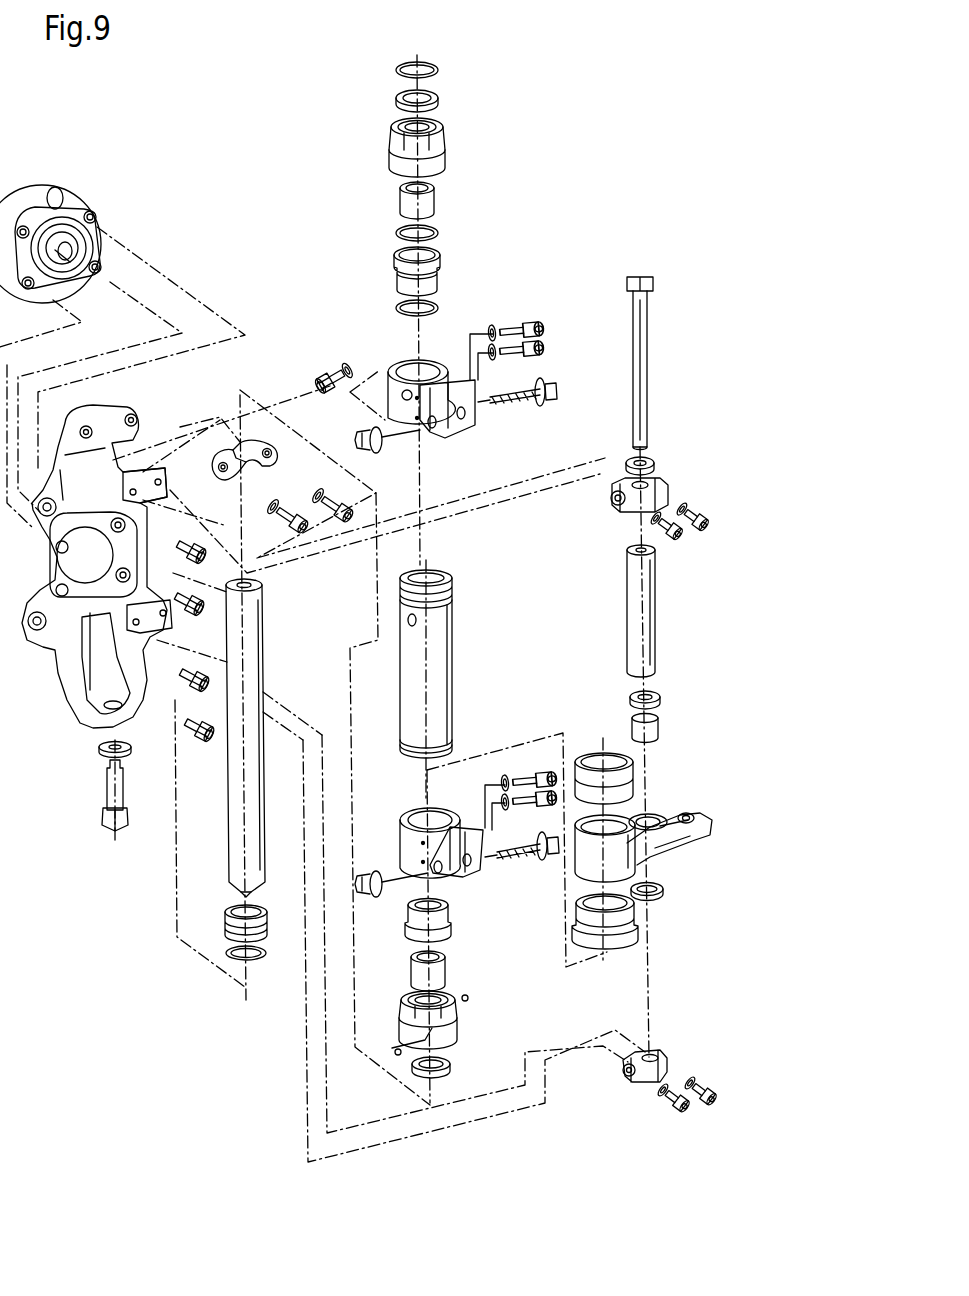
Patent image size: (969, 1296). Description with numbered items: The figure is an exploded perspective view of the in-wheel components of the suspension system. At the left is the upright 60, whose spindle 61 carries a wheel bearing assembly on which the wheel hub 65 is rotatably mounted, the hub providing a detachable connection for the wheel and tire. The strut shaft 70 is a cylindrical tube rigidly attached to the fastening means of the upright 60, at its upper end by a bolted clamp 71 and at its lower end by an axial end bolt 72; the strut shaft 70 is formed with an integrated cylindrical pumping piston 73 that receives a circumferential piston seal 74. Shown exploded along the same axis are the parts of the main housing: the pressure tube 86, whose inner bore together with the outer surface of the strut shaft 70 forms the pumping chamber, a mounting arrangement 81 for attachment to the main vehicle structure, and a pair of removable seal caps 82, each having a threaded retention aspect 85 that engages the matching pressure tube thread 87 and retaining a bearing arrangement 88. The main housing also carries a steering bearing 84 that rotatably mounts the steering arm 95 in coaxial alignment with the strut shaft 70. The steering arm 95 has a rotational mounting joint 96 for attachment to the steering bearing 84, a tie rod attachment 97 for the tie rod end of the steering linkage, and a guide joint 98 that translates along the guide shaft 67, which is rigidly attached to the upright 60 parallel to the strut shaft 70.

The upright 60 is at (75, 700).
The spindle 61 is at (32, 242).
The wheel hub 65 is at (37, 196).
The guide shaft 67 is at (655, 605).
The strut shaft 70 is at (252, 640).
The bolted clamp 71 is at (255, 448).
The axial end bolt 72 is at (107, 827).
The cylindrical pumping piston 73 is at (233, 933).
The circumferential piston seal 74 is at (258, 962).
The mounting arrangement 81 is at (445, 365).
The seal cap 82 is at (440, 160).
The steering bearing 84 is at (627, 787).
The threaded retention aspect 85 is at (440, 120).
The pressure tube 86 is at (440, 667).
The pressure tube thread 87 is at (452, 592).
The bearing arrangement 88 is at (427, 205).
The steering arm 95 is at (680, 848).
The rotational mounting joint 96 is at (593, 840).
The tie rod attachment 97 is at (697, 813).
The guide joint 98 is at (660, 815).